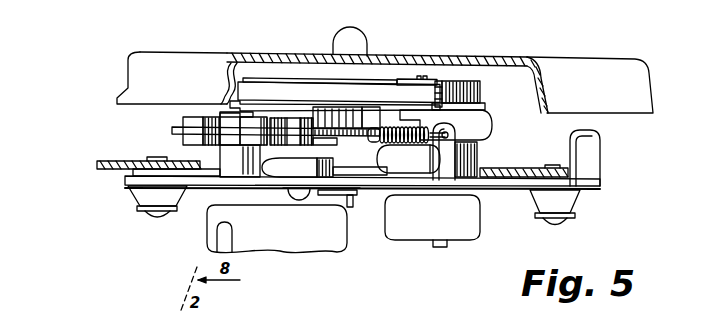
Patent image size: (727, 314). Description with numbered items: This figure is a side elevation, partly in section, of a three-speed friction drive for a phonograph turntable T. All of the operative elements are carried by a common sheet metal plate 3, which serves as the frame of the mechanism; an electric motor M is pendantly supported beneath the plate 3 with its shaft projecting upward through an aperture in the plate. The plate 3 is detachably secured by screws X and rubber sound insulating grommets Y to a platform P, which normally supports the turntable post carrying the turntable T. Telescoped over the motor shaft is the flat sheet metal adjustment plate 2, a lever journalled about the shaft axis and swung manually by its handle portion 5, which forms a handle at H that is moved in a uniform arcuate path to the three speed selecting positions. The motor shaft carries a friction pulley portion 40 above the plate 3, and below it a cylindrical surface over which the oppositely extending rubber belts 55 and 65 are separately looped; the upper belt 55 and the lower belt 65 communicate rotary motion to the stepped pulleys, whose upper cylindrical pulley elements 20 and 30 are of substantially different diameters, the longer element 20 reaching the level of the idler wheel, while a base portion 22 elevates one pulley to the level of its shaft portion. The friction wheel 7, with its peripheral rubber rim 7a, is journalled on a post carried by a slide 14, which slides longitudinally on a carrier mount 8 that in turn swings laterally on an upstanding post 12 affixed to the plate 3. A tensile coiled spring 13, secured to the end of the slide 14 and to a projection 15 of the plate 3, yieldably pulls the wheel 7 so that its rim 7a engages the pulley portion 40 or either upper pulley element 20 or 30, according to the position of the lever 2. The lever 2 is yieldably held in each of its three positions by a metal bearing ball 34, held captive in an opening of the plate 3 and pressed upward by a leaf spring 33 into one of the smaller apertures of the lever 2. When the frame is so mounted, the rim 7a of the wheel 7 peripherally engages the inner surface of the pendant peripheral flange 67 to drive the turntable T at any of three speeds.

The pendant peripheral flange 67 is at (132, 77).
The turntable T is at (568, 57).
The friction wheel 7 is at (288, 78).
The peripheral rubber rim 7a is at (248, 88).
The upper pulley element 20 is at (405, 80).
The friction pulley portion 40 is at (436, 82).
The upper pulley element 30 is at (457, 84).
The upper belt 55 is at (483, 128).
The upstanding post 12 is at (240, 100).
The slide 14 is at (203, 132).
The carrier mount 8 is at (230, 125).
The sheet metal plate 3 is at (168, 182).
The platform P is at (208, 166).
The handle portion 5 is at (590, 171).
The handle portion H is at (592, 147).
The rubber sound insulating grommets Y is at (565, 202).
The screws X is at (565, 225).
The adjustment plate 2 is at (298, 178).
The leaf spring 33 is at (333, 193).
The metal bearing ball 34 is at (350, 203).
The lower belt 65 is at (393, 163).
The tensile coiled spring 13 is at (380, 142).
The projection 15 is at (445, 160).
The base portion 22 is at (477, 152).
The electric motor M is at (278, 257).